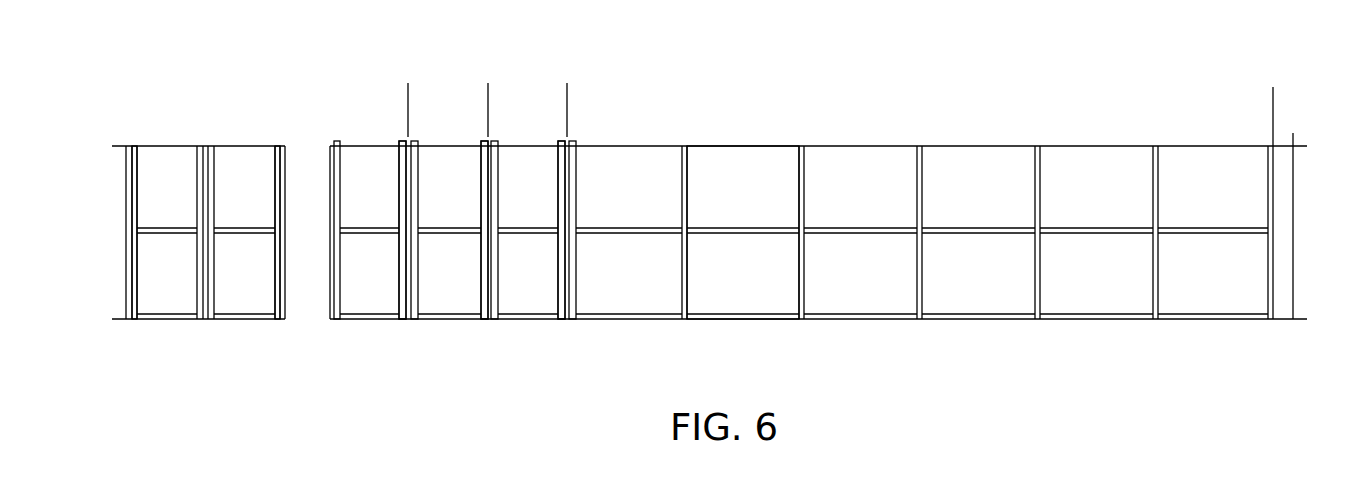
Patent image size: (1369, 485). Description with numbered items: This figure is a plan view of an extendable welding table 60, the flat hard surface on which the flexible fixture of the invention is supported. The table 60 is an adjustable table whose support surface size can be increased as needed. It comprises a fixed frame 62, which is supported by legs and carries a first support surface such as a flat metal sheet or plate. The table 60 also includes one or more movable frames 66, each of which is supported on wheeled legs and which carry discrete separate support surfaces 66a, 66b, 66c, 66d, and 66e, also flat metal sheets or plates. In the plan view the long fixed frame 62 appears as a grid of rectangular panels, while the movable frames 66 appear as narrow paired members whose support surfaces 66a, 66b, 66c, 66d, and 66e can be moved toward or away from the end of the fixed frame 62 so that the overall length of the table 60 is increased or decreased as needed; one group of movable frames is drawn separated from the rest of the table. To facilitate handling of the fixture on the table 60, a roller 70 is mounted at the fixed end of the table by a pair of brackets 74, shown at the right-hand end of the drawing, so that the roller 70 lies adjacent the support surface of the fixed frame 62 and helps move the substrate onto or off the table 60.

The welding table 60 is at (1048, 118).
The fixed frame 62 is at (736, 182).
The movable frames 66 is at (260, 130).
The support surface 66a is at (542, 158).
The support surface 66b is at (442, 285).
The support surface 66c is at (368, 285).
The support surface 66d is at (246, 285).
The support surface 66e is at (160, 285).
The roller 70 is at (1296, 224).
The brackets 74 is at (1282, 158).